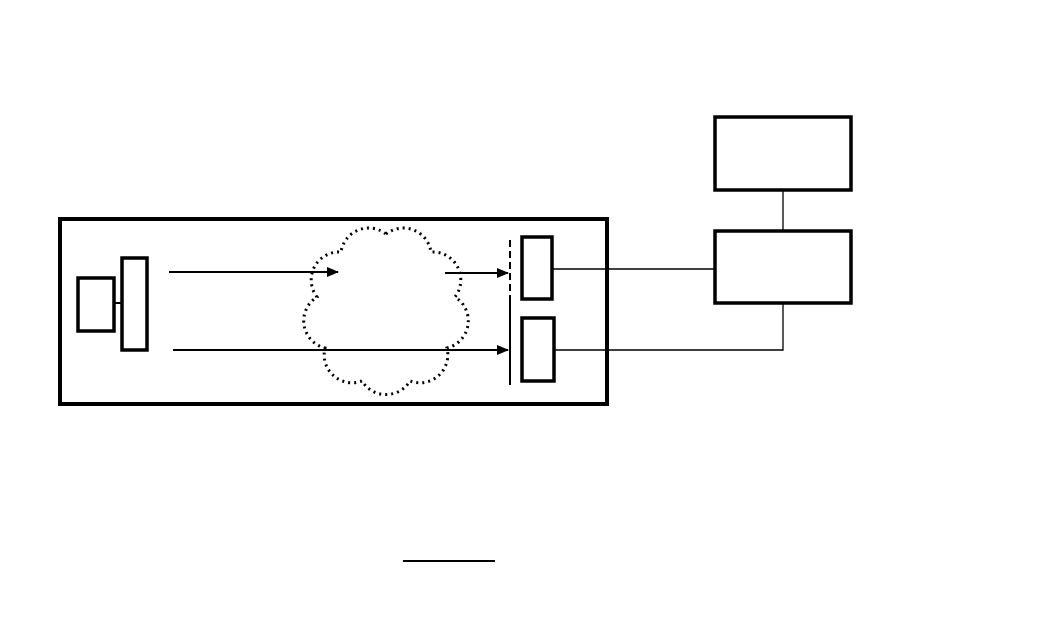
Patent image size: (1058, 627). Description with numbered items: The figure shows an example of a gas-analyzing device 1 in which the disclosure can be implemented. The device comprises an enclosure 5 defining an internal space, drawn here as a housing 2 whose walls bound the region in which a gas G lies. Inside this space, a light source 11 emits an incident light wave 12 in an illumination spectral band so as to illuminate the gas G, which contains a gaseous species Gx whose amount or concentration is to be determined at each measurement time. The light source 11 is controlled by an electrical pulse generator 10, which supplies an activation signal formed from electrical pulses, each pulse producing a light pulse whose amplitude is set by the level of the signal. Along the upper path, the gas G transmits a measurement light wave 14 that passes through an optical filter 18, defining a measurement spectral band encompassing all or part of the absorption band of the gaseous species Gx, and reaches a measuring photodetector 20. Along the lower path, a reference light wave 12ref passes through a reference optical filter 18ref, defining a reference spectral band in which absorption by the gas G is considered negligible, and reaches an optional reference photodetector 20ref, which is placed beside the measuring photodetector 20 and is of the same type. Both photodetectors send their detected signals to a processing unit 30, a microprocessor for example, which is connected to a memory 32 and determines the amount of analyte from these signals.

The gas-analyzing device 1 is at (118, 190).
The measuring cell / housing 2 is at (325, 406).
The enclosure 5 is at (210, 217).
The electrical pulse generator 10 is at (96, 314).
The light source 11 is at (136, 355).
The incident light wave 12 is at (305, 266).
The reference light wave 12ref is at (199, 357).
The measurement light wave 14 is at (462, 266).
The optical filter 18 is at (506, 235).
The reference optical filter 18ref is at (514, 387).
The measuring photodetector 20 is at (538, 238).
The reference photodetector 20ref is at (540, 361).
The processing unit 30 is at (770, 270).
The memory 32 is at (778, 147).
The gas G is at (371, 263).
The gaseous species Gx is at (403, 246).